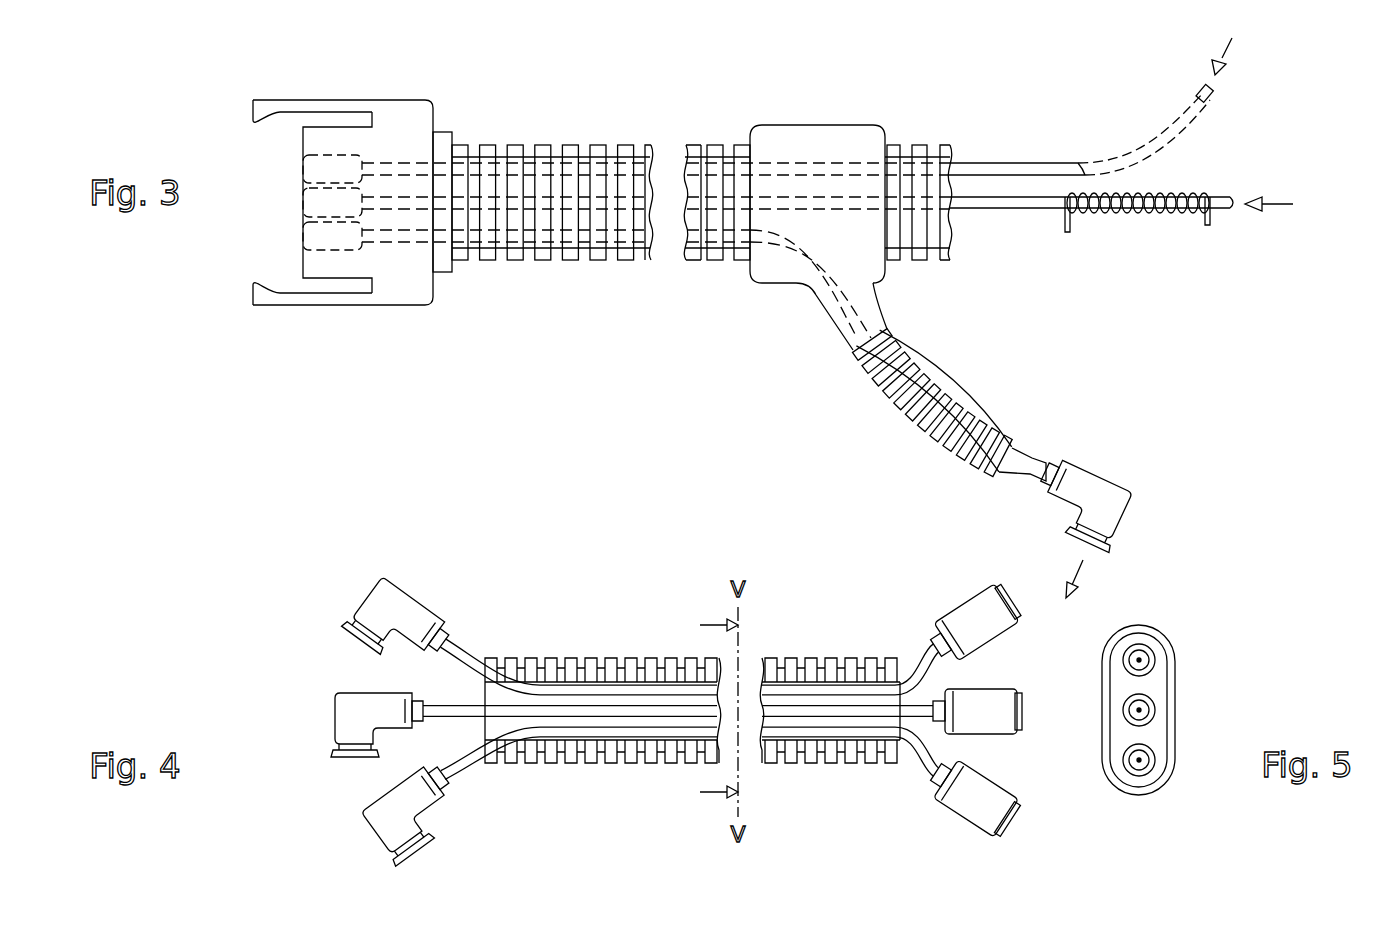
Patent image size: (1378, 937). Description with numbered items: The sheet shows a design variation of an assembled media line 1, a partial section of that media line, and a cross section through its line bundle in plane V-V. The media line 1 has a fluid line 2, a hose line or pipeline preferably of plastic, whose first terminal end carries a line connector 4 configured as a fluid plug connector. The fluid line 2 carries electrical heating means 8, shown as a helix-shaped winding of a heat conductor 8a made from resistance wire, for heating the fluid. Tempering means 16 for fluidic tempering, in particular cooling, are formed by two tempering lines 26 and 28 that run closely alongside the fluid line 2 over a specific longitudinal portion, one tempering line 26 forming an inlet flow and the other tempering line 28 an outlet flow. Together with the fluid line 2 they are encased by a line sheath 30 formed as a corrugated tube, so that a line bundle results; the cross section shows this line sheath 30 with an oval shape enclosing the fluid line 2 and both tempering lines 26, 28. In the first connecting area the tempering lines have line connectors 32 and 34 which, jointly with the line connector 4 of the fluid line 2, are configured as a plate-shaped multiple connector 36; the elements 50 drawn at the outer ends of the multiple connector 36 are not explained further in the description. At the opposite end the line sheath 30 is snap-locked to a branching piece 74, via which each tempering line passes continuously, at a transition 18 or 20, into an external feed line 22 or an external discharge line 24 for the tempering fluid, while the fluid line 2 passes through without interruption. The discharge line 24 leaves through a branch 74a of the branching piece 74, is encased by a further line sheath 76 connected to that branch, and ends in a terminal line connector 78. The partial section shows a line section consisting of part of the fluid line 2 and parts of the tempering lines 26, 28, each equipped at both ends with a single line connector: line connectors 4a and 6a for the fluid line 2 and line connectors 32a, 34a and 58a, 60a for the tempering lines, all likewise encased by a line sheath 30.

In FIG. 3, the media line 1 is at (1047, 121).
In FIG. 3, the fluid line 2 is at (569, 200).
In FIG. 4, the fluid line 2 is at (834, 706).
In FIG. 5, the fluid line 2 is at (1142, 712).
In FIG. 3, the line connector 4 is at (300, 203).
In FIG. 4, the line connector 4a is at (326, 716).
In FIG. 4, the line connector 6a is at (995, 722).
In FIG. 3, the electrical heating means 8 is at (1162, 194).
In FIG. 3, the heat conductor 8a is at (1137, 212).
In FIG. 3, the tempering means 16 is at (702, 146).
In FIG. 4, the tempering means 16 is at (692, 687).
In FIG. 3, the transition 18 is at (1146, 125).
In FIG. 3, the transition 20 is at (808, 325).
In FIG. 3, the external feed line 22 is at (1196, 108).
In FIG. 3, the external discharge line 24 is at (1027, 460).
In FIG. 3, the tempering line 26 is at (770, 163).
In FIG. 4, the tempering line 26 is at (650, 686).
In FIG. 5, the tempering line 26 is at (1142, 661).
In FIG. 3, the tempering line 28 is at (651, 237).
In FIG. 4, the tempering line 28 is at (612, 734).
In FIG. 5, the tempering line 28 is at (1142, 762).
In FIG. 3, the line sheath 30 is at (630, 140).
In FIG. 4, the line sheath 30 is at (552, 766).
In FIG. 5, the line sheath 30 is at (1164, 636).
In FIG. 3, the line connector 32 is at (300, 162).
In FIG. 4, the line connector 32a is at (341, 596).
In FIG. 3, the line connector 34 is at (300, 238).
In FIG. 4, the line connector 34a is at (348, 826).
In FIG. 3, the multiple connector 36 is at (396, 110).
In FIG. 3, the latch clip 50 is at (260, 106).
In FIG. 4, the line connector 58a is at (961, 620).
In FIG. 4, the line connector 60a is at (966, 796).
In FIG. 3, the branching piece 74 is at (794, 127).
In FIG. 3, the branch 74a is at (831, 310).
In FIG. 3, the line sheath 76 is at (943, 385).
In FIG. 3, the terminal line connector 78 is at (1124, 490).